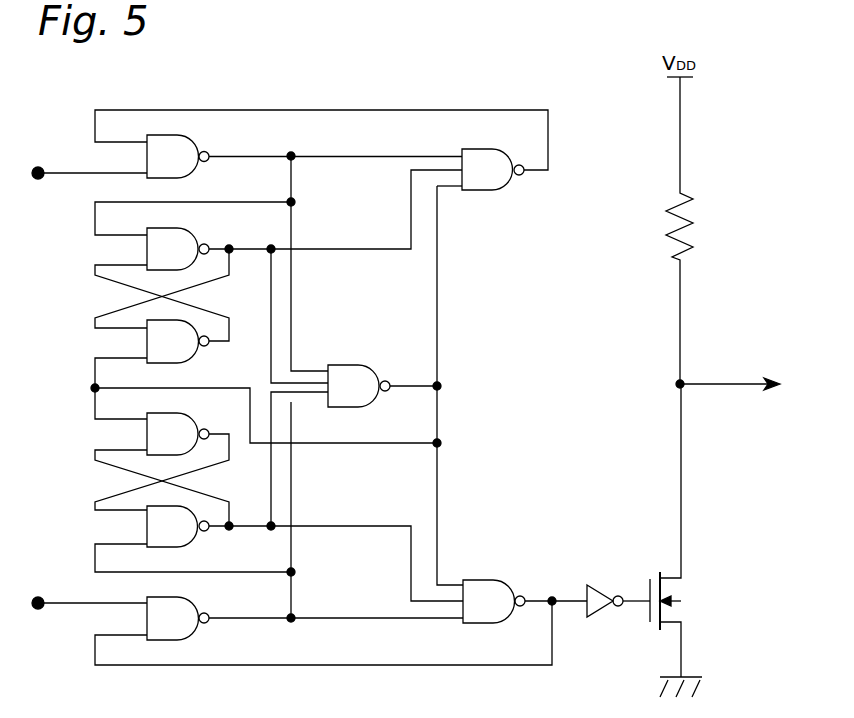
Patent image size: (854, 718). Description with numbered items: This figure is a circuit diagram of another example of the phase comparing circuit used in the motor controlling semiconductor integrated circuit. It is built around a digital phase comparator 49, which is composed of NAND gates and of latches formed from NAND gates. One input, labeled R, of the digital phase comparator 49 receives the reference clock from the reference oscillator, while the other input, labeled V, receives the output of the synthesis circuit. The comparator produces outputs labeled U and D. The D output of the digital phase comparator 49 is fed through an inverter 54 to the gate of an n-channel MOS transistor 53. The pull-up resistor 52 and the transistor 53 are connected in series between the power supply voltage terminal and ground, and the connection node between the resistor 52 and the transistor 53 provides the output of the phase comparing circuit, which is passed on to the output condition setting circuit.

The digital phase comparator 49 is at (301, 106).
The pull-up resistor 52 is at (694, 223).
The n-channel MOS transistor 53 is at (690, 593).
The inverter 54 is at (603, 583).